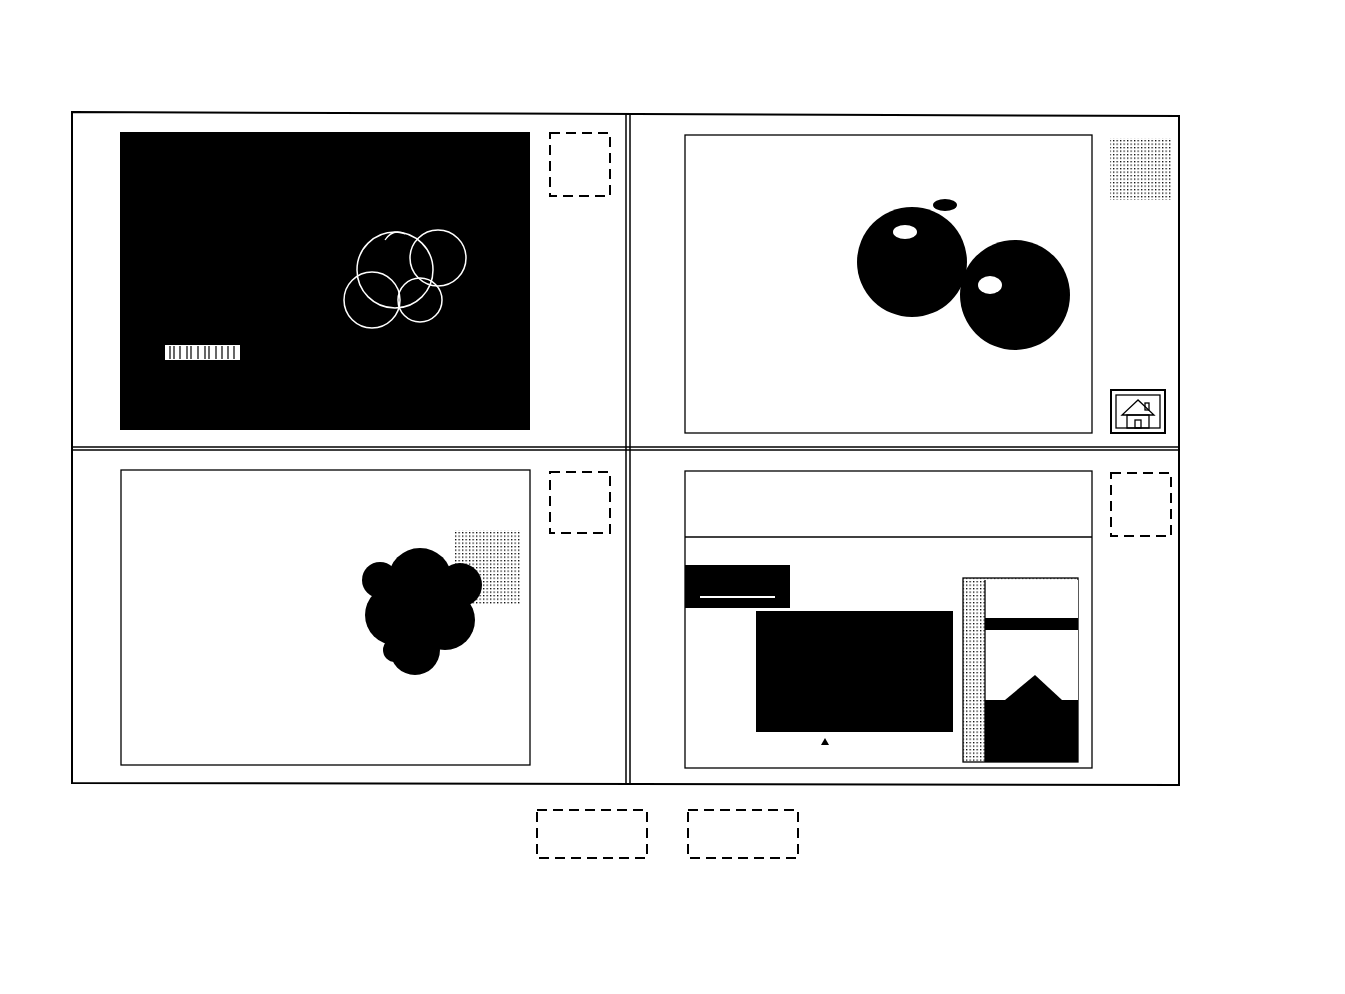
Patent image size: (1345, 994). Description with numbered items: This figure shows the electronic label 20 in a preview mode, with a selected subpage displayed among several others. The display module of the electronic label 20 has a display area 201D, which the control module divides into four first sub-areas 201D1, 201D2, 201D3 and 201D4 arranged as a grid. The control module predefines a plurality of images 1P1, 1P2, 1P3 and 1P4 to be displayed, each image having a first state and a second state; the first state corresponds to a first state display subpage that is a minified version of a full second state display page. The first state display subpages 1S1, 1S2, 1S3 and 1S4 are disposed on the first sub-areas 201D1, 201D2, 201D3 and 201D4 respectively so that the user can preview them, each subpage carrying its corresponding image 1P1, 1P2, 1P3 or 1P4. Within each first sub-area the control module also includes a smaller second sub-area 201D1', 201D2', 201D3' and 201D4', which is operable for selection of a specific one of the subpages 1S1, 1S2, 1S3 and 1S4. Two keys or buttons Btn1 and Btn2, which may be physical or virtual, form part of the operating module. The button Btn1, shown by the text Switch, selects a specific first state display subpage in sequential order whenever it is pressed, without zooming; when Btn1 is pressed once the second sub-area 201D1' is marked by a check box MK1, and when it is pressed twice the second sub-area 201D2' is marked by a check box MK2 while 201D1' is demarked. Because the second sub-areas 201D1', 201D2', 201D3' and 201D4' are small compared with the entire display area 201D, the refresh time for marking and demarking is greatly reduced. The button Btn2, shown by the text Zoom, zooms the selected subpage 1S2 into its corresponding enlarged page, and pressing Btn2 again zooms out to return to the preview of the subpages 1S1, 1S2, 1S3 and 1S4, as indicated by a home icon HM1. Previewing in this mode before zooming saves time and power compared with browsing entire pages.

The display area 201D is at (409, 100).
The first sub-area 201D1 is at (411, 224).
The first sub-area 201D2 is at (1002, 252).
The first sub-area 201D3 is at (372, 689).
The first sub-area 201D4 is at (1009, 688).
The second sub-area 201D1' is at (629, 118).
The second sub-area 201D2' is at (1192, 121).
The second sub-area 201D3' is at (583, 568).
The second sub-area 201D4' is at (1222, 521).
The first state display subpage 1S1 is at (325, 224).
The first state display subpage 1S2 is at (966, 245).
The first state display subpage 1S3 is at (325, 689).
The first state display subpage 1S4 is at (988, 688).
The image 1P1 is at (345, 133).
The image 1P2 is at (899, 185).
The image 1P3 is at (478, 688).
The image 1P4 is at (879, 746).
The check box MK1 is at (610, 208).
The check box MK2 is at (1176, 174).
The home icon HM1 is at (1165, 415).
The button Btn1 is at (798, 835).
The button Btn2 is at (555, 858).
The electronic label 20 is at (1082, 883).